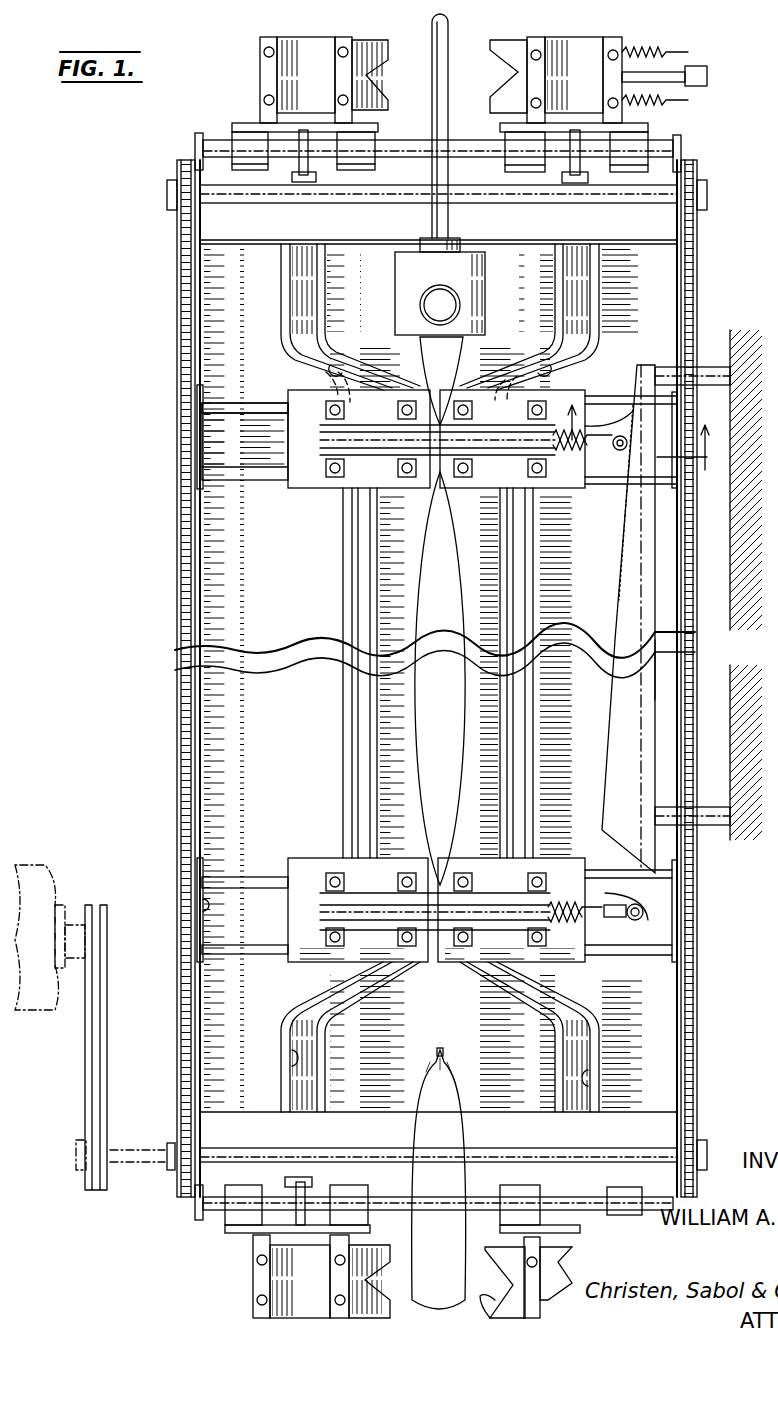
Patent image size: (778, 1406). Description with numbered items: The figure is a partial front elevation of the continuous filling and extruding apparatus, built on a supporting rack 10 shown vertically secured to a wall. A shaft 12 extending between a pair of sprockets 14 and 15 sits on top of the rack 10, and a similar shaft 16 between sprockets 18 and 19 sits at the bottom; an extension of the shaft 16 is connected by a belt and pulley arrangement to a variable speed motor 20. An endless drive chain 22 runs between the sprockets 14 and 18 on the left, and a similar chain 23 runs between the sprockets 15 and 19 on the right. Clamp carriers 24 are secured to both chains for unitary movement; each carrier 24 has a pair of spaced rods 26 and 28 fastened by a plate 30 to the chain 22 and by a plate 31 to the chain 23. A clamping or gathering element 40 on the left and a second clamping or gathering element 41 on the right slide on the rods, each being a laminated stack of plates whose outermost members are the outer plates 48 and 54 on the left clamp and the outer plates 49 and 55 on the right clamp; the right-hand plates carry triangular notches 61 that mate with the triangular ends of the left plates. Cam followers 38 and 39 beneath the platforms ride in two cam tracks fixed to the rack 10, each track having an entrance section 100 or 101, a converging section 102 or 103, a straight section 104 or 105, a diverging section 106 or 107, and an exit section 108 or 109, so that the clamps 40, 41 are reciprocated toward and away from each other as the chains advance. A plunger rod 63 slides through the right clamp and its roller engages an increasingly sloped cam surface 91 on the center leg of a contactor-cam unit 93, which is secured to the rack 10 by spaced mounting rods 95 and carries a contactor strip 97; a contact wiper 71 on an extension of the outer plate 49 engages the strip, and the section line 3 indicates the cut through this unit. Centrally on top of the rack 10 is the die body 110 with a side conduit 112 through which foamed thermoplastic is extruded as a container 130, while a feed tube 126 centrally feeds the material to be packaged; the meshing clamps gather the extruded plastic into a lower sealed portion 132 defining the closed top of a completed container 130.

The section line 3- 3 is at (638, 444).
The supporting rack 10 is at (270, 619).
The shaft 12 is at (210, 195).
The sprocket 14 is at (167, 193).
The sprocket 15 is at (707, 190).
The shaft 16 is at (270, 1154).
The sprocket 18 is at (172, 1170).
The sprocket 19 is at (704, 1142).
The variable speed motor 20 is at (30, 865).
The endless drive chain 22 is at (180, 780).
The drive chain 23 is at (690, 970).
The clamp carrier 24 is at (305, 504).
The rod 26 is at (283, 404).
The rod 28 is at (223, 146).
The plate 30 is at (195, 143).
The plate 31 is at (681, 138).
The cam follower 38 is at (310, 1176).
The cam follower 39 is at (562, 178).
The clamping or gathering element 40 is at (296, 40).
The second clamping or gathering element 41 is at (577, 40).
The outer plate 48 is at (324, 1287).
The outer plate 49 is at (490, 1320).
The outer plate 54 is at (320, 40).
The outer plate 55 is at (515, 40).
The triangular notch 61 is at (500, 1274).
The plunger rod 63 is at (633, 912).
The contact wiper 71 is at (628, 412).
The cam surface 91 is at (620, 609).
The contactor-cam unit 93 is at (643, 648).
The mounting rod 95 is at (709, 368).
The contactor strip 97 is at (626, 562).
The entrance section 100 is at (298, 258).
The entrance section 101 is at (572, 258).
The converging section 102 is at (360, 373).
The converging section 103 is at (536, 373).
The straight section 104 is at (344, 581).
The straight section 105 is at (537, 670).
The diverging section 106 is at (310, 988).
The diverging section 107 is at (518, 970).
The exit section 108 is at (290, 1062).
The exit section 109 is at (585, 1085).
The die body 110 is at (437, 279).
The side conduit 112 is at (452, 317).
The feed tube 126 is at (432, 216).
The container 130 is at (416, 1138).
The lower sealed portion 132 is at (442, 1068).